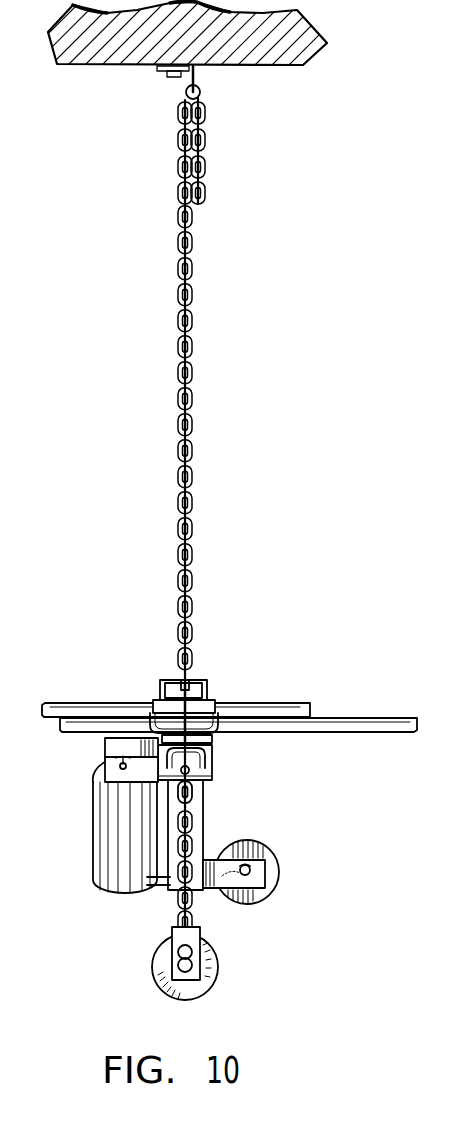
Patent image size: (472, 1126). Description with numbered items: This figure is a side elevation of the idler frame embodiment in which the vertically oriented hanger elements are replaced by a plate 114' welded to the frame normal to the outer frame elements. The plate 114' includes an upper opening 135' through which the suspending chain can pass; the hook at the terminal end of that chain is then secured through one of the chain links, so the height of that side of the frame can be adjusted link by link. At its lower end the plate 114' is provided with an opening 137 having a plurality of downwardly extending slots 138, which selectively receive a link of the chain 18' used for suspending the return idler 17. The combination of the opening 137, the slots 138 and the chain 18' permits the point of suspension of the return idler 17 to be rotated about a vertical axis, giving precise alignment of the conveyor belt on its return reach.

The upper opening 135' is at (207, 692).
The plate 114' is at (225, 748).
The opening 137 is at (210, 757).
The downwardly extending slots 138 is at (212, 773).
The chain 18' is at (267, 863).
The return idler 17 is at (220, 970).